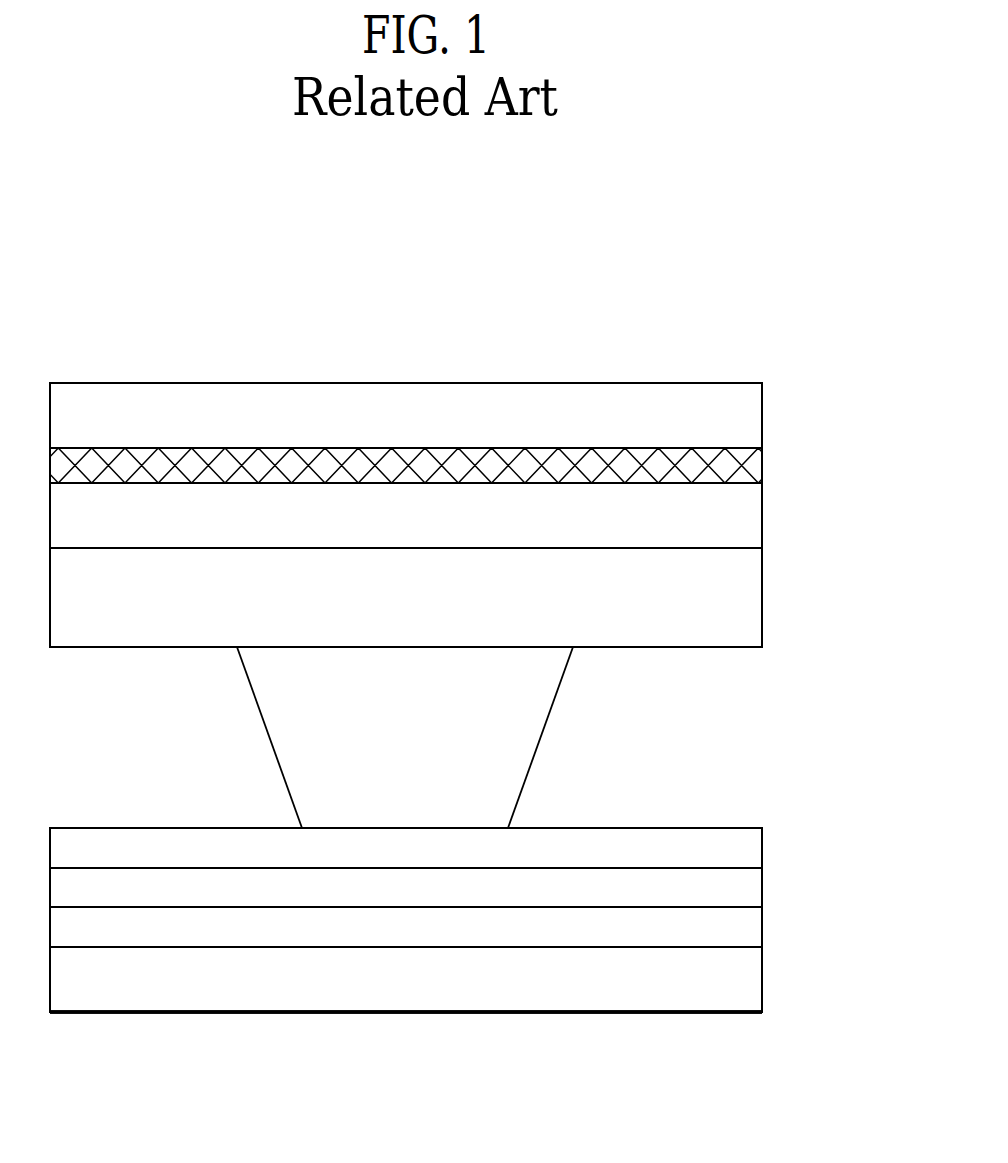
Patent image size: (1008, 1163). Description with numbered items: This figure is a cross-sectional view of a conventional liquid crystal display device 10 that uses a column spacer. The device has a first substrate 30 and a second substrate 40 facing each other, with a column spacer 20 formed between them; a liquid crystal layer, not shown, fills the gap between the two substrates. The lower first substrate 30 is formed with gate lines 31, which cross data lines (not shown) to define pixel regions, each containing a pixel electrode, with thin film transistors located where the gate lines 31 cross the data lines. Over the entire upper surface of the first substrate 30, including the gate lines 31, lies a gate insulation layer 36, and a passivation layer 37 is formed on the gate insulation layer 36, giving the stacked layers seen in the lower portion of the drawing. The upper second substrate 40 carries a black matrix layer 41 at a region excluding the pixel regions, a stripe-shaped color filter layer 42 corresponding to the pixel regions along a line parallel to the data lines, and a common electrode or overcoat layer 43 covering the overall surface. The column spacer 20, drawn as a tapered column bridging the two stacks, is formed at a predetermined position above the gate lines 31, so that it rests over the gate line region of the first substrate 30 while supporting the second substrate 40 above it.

The related art liquid crystal display device 10 is at (735, 303).
The column spacer 20 is at (527, 742).
The first substrate 30 is at (748, 980).
The gate lines 31 is at (748, 929).
The gate insulation layer 36 is at (748, 888).
The passivation layer 37 is at (748, 850).
The second substrate 40 is at (743, 420).
The black matrix layer 41 is at (742, 470).
The color filter layer 42 is at (742, 527).
The common electrode or overcoat layer 43 is at (740, 606).